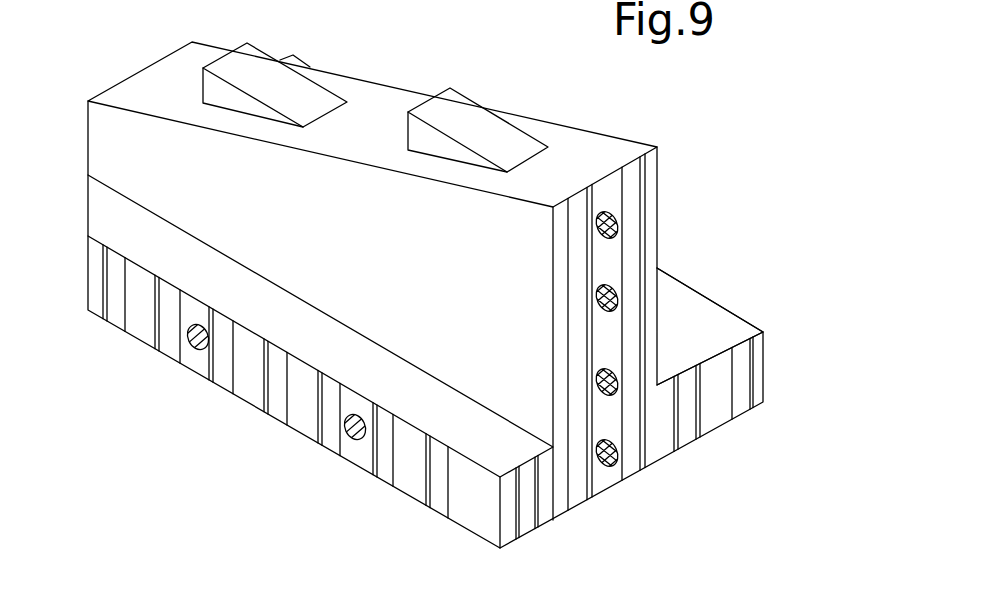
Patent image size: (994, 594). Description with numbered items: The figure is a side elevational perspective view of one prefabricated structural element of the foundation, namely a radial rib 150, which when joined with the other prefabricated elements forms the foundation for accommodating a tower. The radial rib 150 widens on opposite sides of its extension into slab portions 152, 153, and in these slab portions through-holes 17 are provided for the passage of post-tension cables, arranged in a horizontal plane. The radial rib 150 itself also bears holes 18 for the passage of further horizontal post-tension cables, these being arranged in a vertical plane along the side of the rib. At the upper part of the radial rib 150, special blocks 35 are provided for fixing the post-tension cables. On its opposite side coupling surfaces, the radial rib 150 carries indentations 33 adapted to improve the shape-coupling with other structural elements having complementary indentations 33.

The radial rib 150 is at (779, 270).
The slab portion 152 is at (690, 327).
The slab portion 153 is at (462, 422).
The indentations 33 is at (192, 310).
The through-holes 17 is at (200, 350).
The holes 18 is at (618, 282).
The special blocks 35 is at (303, 97).